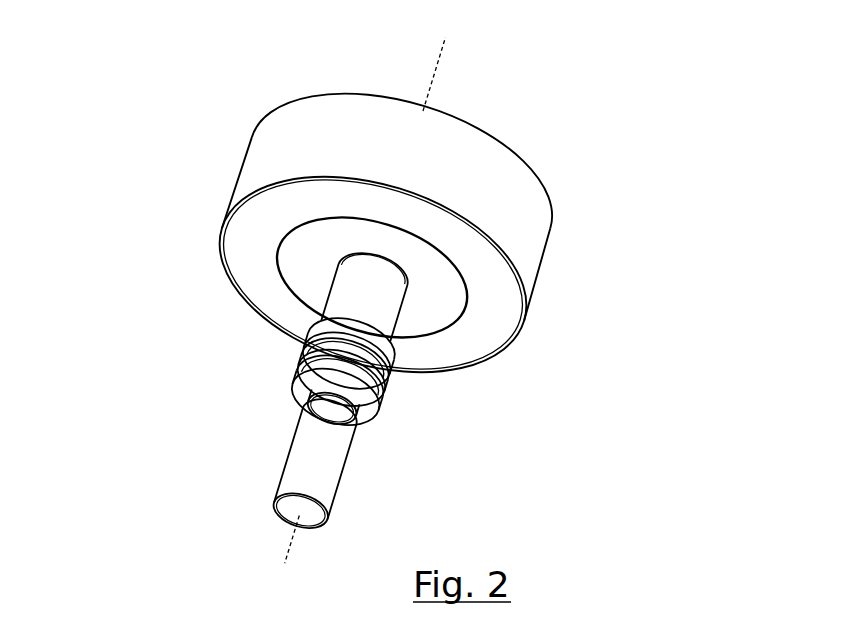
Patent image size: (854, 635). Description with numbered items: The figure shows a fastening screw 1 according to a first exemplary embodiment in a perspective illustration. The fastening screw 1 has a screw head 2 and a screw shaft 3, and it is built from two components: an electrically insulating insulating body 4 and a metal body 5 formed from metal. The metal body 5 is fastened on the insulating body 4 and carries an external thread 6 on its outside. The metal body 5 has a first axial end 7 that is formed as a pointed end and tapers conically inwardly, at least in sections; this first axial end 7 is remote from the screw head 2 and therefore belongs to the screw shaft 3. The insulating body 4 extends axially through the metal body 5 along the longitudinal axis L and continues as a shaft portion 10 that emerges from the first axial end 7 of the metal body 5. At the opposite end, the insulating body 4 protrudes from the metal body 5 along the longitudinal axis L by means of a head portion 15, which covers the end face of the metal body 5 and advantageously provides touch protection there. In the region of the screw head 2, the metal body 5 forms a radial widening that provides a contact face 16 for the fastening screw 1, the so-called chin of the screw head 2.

The fastening screw 1 is at (112, 104).
The screw head 2 is at (545, 290).
The screw shaft 3 is at (467, 469).
The insulating body 4 is at (231, 249).
The metal body 5 is at (410, 320).
The external thread 6 is at (297, 375).
The first axial end 7 is at (298, 420).
The shaft portion 10 is at (363, 437).
The head portion 15 is at (236, 145).
The contact face 16 is at (304, 258).
The longitudinal axis L is at (365, 292).